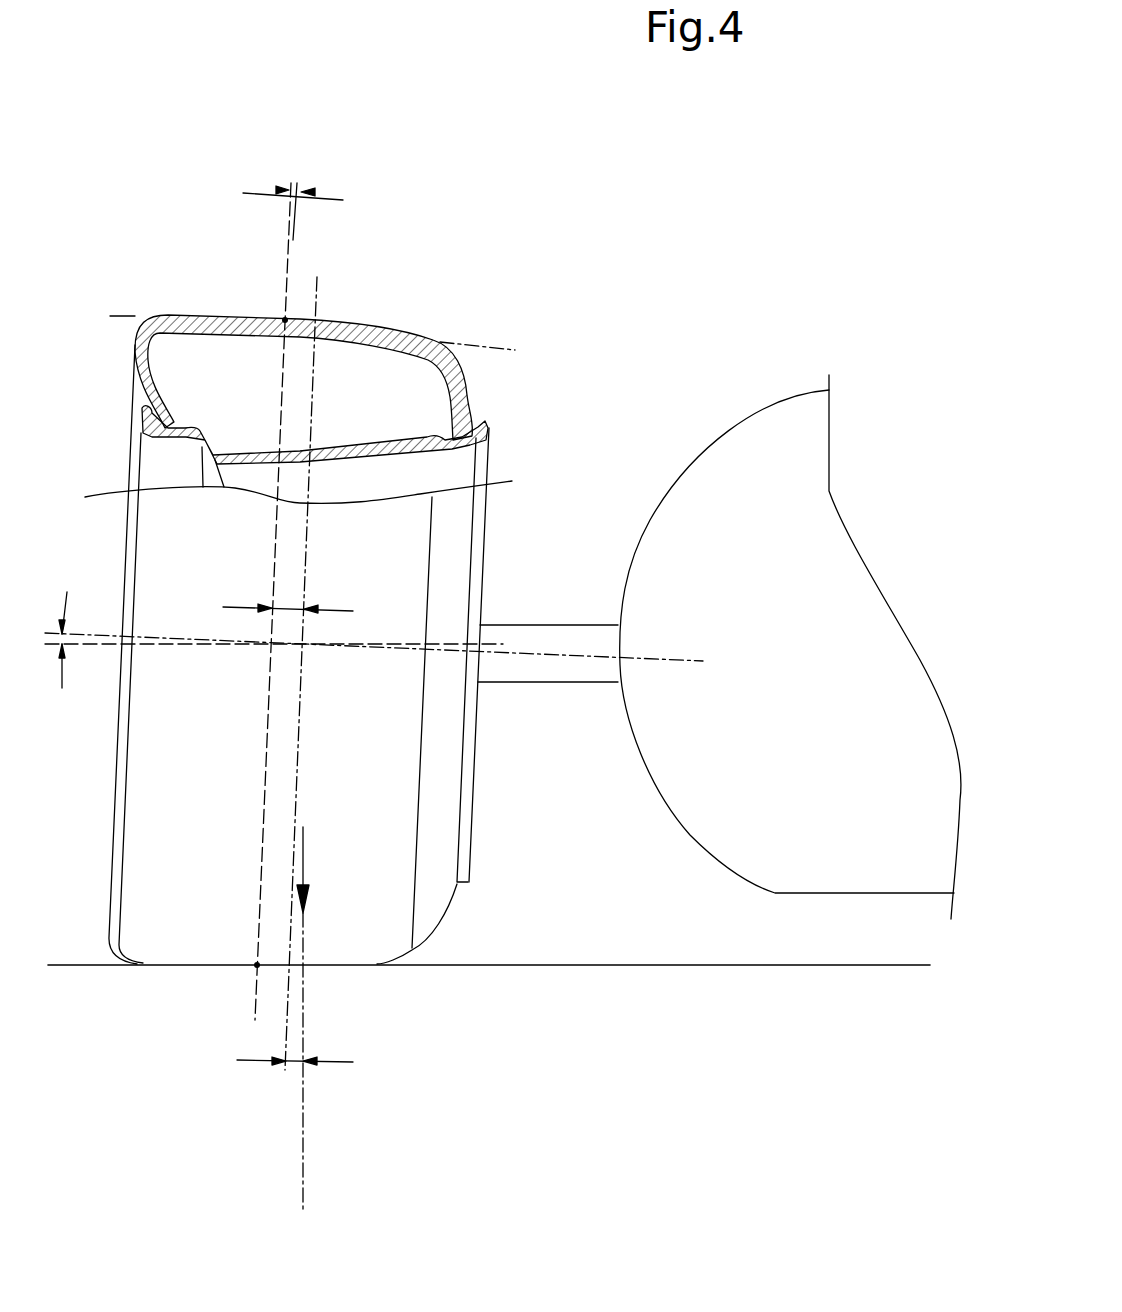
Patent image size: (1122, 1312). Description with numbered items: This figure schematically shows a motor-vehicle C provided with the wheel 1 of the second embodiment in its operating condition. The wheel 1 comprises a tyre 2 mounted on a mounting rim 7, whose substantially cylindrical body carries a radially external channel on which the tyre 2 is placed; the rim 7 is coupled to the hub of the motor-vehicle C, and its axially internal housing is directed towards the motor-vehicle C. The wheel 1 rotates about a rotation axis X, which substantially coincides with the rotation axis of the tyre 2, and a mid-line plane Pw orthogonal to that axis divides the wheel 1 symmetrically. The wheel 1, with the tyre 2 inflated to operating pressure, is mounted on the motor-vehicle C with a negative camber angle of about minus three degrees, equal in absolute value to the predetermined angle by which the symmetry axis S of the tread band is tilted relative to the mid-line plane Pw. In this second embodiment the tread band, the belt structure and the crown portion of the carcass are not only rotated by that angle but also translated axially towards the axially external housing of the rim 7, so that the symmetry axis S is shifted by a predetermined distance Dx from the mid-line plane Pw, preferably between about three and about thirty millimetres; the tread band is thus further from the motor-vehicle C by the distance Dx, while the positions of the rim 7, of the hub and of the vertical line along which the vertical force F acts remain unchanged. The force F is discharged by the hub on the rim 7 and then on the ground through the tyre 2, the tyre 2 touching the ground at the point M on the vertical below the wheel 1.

The wheel 1 is at (157, 253).
The tyre 2 is at (492, 375).
The mounting rim 7 is at (191, 470).
The motor-vehicle C is at (753, 470).
The symmetry axis S is at (293, 240).
The mid-line plane Pw is at (317, 288).
The contact point / tread center point M is at (285, 320).
The predetermined distance Dx is at (235, 606).
The rotation axis X is at (545, 657).
The vertical force F is at (305, 855).